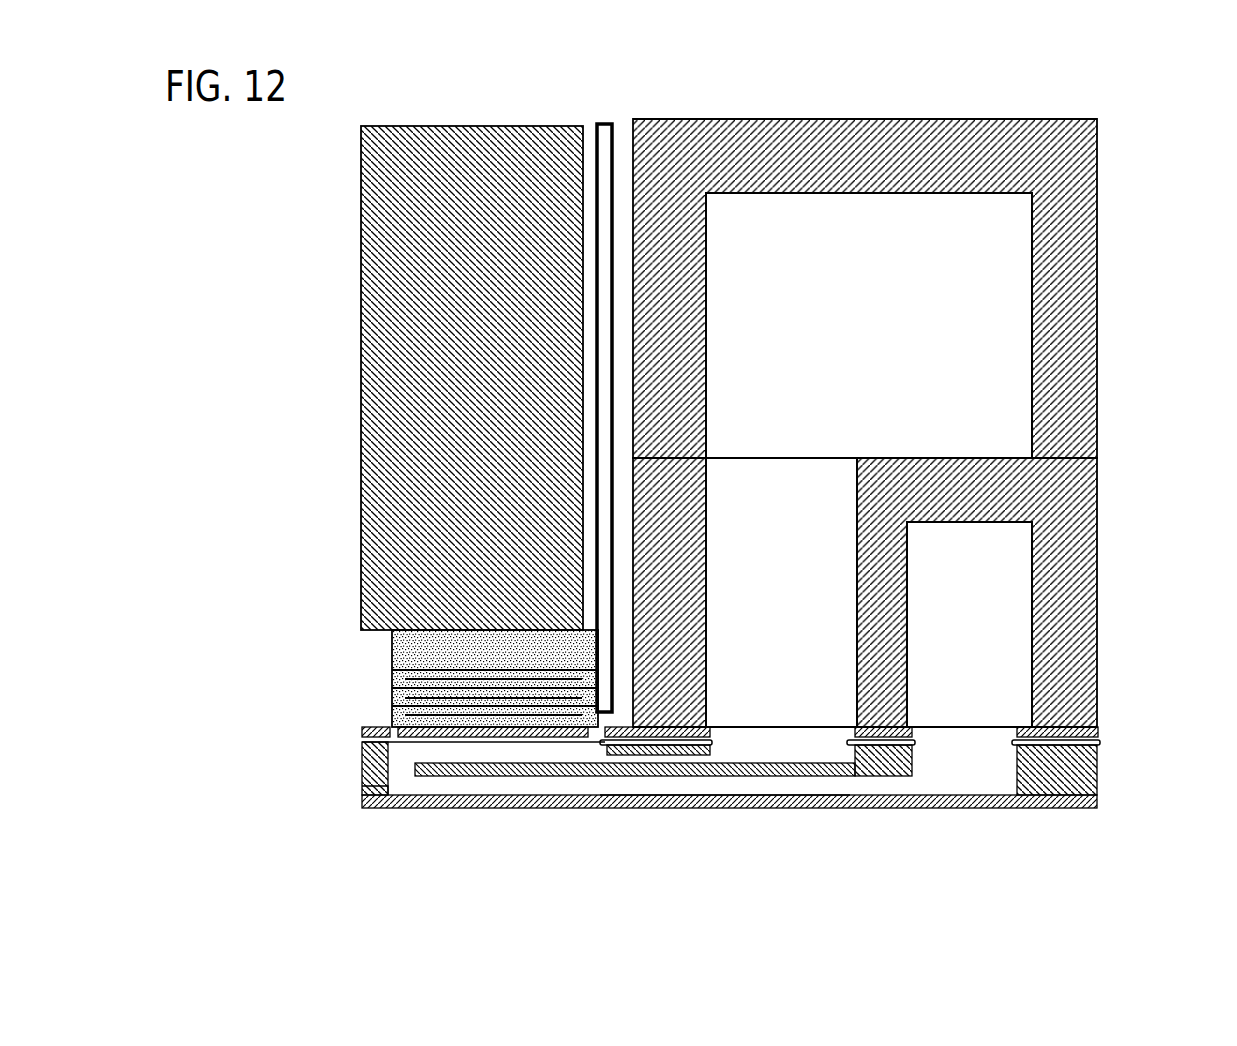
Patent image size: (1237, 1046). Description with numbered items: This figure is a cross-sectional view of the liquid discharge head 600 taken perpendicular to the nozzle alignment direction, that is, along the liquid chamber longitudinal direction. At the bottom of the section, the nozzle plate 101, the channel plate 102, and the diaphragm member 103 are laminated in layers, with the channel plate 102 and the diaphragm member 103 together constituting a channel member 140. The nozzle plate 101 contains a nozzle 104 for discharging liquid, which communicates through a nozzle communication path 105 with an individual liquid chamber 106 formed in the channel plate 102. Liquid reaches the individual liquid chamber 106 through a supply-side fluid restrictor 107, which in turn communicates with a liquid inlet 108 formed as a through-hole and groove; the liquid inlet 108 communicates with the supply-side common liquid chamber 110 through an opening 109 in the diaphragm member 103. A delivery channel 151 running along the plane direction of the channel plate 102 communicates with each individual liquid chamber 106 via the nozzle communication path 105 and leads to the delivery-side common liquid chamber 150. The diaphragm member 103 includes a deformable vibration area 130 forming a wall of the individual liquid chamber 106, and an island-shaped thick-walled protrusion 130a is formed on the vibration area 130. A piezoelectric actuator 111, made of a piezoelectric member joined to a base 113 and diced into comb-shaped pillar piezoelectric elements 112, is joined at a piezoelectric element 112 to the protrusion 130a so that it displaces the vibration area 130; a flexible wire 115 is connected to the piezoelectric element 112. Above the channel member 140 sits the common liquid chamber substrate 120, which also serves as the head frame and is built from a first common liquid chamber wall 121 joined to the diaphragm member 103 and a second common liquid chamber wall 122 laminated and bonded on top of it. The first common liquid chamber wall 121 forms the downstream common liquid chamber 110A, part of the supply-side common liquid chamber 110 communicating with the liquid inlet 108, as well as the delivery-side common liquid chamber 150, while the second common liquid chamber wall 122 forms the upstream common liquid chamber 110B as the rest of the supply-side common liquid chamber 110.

The liquid discharge head 600 is at (753, 465).
The common liquid chamber substrate 120 is at (927, 395).
The second common liquid chamber wall 122 is at (1082, 349).
The first common liquid chamber wall 121 is at (1082, 594).
The supply-side common liquid chamber 110 is at (869, 395).
The downstream common liquid chamber 110A is at (795, 588).
The upstream common liquid chamber 110B is at (897, 327).
The delivery-side common liquid chamber 150 is at (955, 618).
The piezoelectric actuator 111 is at (449, 395).
The piezoelectric element 112 is at (390, 693).
The base 113 is at (472, 135).
The flexible wire 115 is at (605, 122).
The channel member 140 is at (760, 789).
The diaphragm member 103 is at (1100, 737).
The vibration area 130 is at (594, 743).
The protrusion 130a is at (547, 740).
The supply-side fluid restrictor 107 is at (645, 756).
The nozzle communication path 105 is at (398, 770).
The nozzle 104 is at (393, 801).
The individual liquid chamber 106 is at (453, 756).
The liquid inlet 108 is at (753, 756).
The opening 109 is at (783, 749).
The delivery channel 151 is at (675, 788).
The channel plate 102 is at (1087, 777).
The nozzle plate 101 is at (1052, 808).